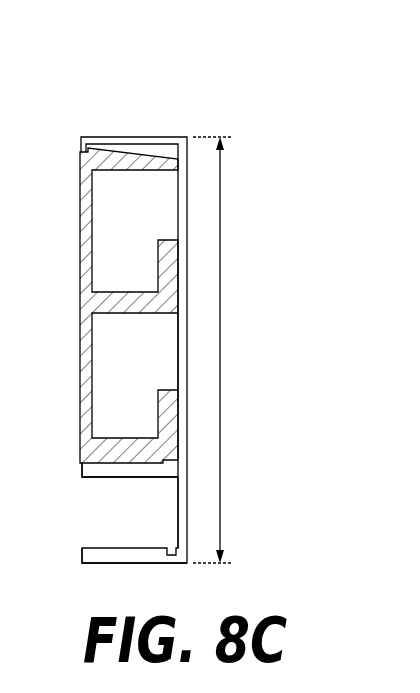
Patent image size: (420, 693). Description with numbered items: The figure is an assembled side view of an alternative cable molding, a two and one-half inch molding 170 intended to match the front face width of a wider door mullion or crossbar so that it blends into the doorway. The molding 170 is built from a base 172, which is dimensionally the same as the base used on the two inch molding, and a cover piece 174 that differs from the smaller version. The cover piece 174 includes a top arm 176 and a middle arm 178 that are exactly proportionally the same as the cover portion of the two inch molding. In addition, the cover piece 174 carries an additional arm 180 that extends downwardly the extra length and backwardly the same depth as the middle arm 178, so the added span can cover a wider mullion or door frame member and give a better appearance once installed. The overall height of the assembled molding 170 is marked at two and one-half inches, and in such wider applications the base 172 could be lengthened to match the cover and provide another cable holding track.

The molding 170 is at (132, 100).
The base 172 is at (82, 390).
The cover piece 174 is at (178, 350).
The top arm 176 is at (151, 136).
The middle arm 178 is at (105, 472).
The additional arm 180 is at (140, 553).